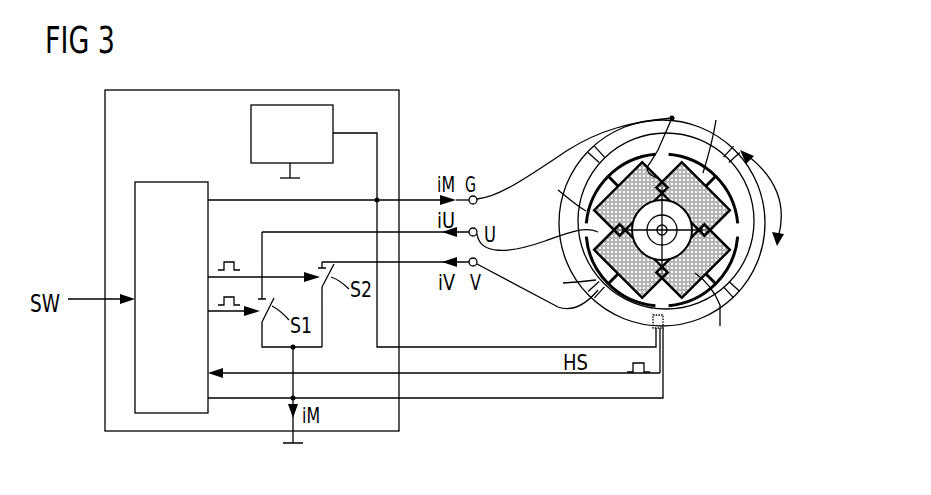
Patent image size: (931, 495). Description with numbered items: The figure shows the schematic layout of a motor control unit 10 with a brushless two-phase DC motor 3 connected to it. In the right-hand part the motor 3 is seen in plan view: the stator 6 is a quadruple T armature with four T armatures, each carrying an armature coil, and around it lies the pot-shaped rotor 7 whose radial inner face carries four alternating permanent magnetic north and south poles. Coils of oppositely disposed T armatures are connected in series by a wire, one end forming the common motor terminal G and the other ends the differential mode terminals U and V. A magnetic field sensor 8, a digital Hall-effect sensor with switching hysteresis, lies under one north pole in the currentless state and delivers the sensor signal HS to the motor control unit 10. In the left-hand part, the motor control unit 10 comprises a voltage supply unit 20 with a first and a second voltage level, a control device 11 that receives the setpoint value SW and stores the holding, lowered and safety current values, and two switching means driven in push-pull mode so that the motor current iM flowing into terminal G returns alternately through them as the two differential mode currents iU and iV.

The brushless two-phase DC motor 3 is at (664, 96).
The stator 6 is at (628, 152).
The pot-shaped rotor 7 is at (733, 304).
The magnetic field sensor 8 is at (665, 329).
The motor control unit 10 is at (399, 92).
The control device 11 is at (172, 182).
The voltage supply unit 20 is at (277, 105).